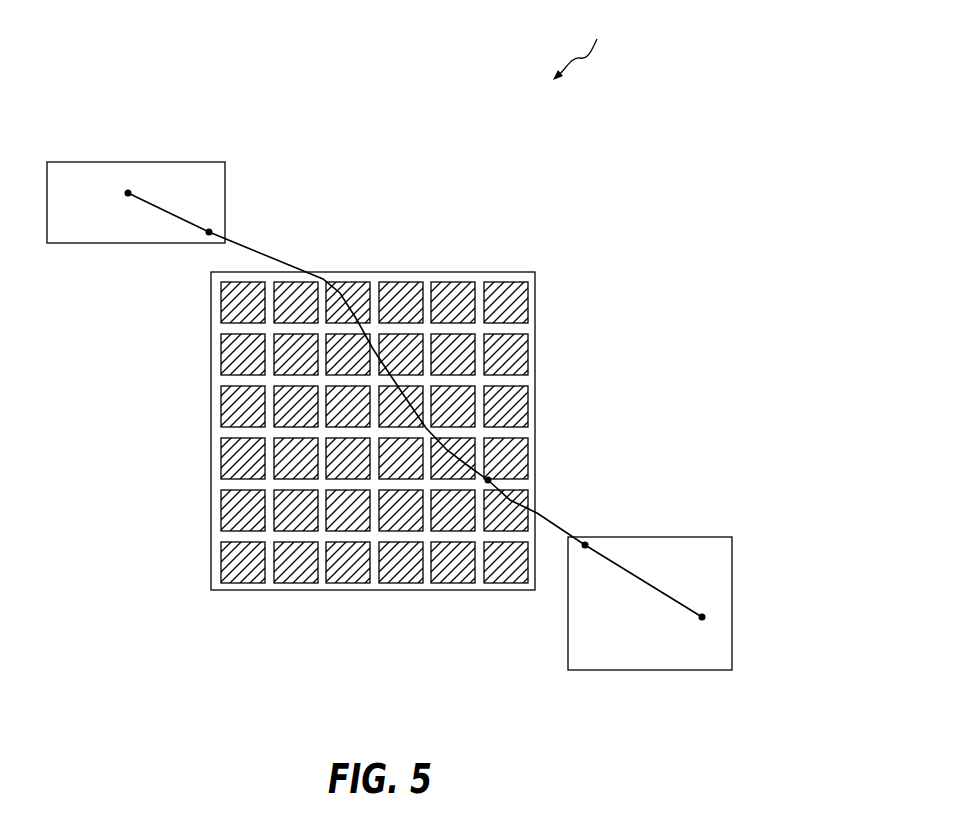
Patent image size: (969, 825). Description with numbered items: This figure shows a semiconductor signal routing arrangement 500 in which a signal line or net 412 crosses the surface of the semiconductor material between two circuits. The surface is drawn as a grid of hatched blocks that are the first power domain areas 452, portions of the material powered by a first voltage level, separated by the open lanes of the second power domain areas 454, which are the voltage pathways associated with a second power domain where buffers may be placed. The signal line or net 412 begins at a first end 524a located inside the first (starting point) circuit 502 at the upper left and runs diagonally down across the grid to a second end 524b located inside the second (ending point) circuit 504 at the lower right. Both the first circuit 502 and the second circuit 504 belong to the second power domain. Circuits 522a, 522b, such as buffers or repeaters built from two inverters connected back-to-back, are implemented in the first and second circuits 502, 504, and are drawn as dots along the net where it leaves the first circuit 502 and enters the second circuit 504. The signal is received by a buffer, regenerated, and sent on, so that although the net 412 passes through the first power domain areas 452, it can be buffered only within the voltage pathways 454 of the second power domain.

The routing layout 500 is at (584, 48).
The first (starting point) circuit 502 is at (225, 178).
The second (ending point) circuit 504 is at (732, 547).
The signal line or net 412 is at (270, 255).
The first power domain areas 452 is at (437, 282).
The second power domain areas 454 is at (480, 278).
The circuit 522a is at (209, 232).
The circuit 522b is at (488, 480).
The first end 524a is at (128, 193).
The second end 524b is at (702, 617).